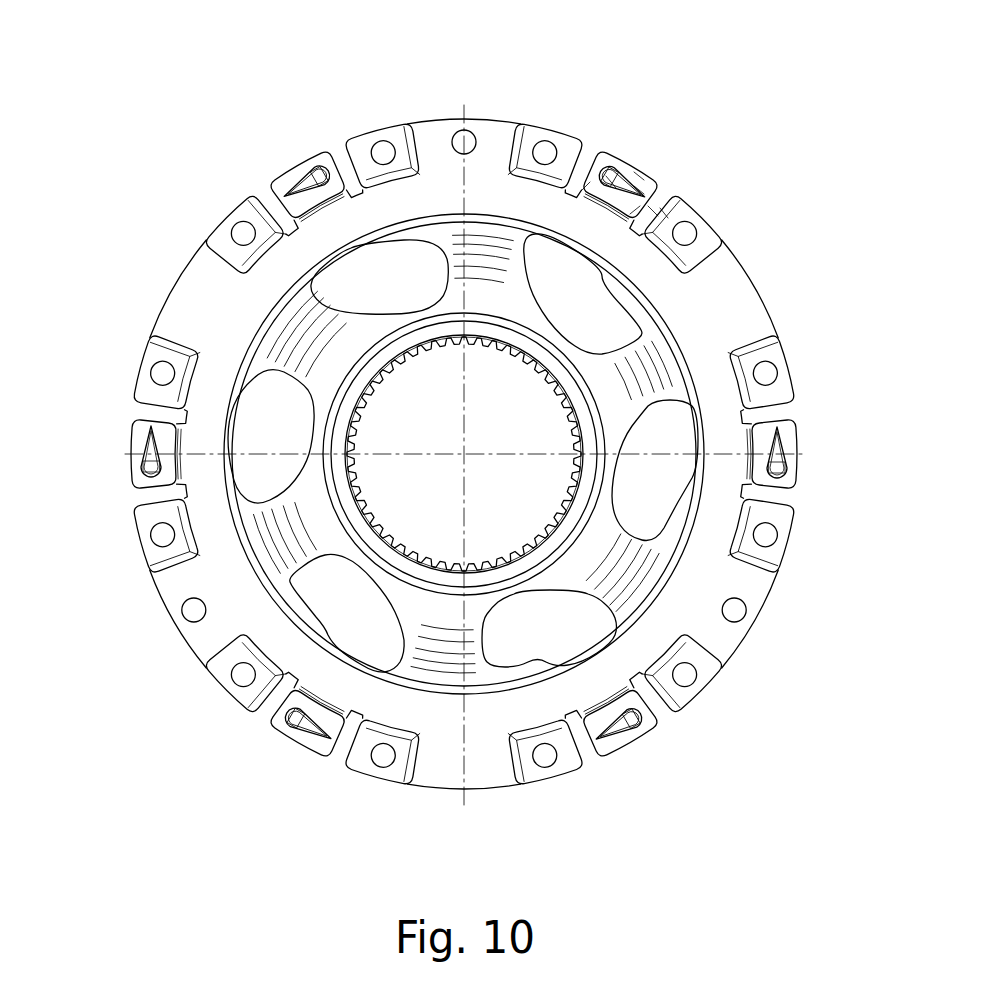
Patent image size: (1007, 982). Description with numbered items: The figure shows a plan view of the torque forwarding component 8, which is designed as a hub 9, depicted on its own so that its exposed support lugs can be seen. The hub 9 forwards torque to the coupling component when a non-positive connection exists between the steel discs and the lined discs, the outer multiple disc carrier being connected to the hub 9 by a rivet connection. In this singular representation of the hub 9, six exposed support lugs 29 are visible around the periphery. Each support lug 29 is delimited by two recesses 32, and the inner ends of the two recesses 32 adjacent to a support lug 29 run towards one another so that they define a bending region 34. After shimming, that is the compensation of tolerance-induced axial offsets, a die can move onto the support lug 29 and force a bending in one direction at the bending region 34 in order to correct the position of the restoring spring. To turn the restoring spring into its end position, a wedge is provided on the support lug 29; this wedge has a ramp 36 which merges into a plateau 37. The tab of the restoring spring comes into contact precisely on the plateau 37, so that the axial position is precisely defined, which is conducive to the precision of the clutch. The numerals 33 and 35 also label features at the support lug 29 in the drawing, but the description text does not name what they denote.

The torque forwarding component 8 is at (812, 350).
The hub 9 is at (464, 454).
The support lug 29 is at (300, 152).
The recess 32 is at (577, 196).
The side wall 33 is at (613, 182).
The bending region 34 is at (346, 185).
The outer wall 35 is at (655, 212).
The ramp 36 is at (640, 190).
The plateau 37 is at (640, 176).